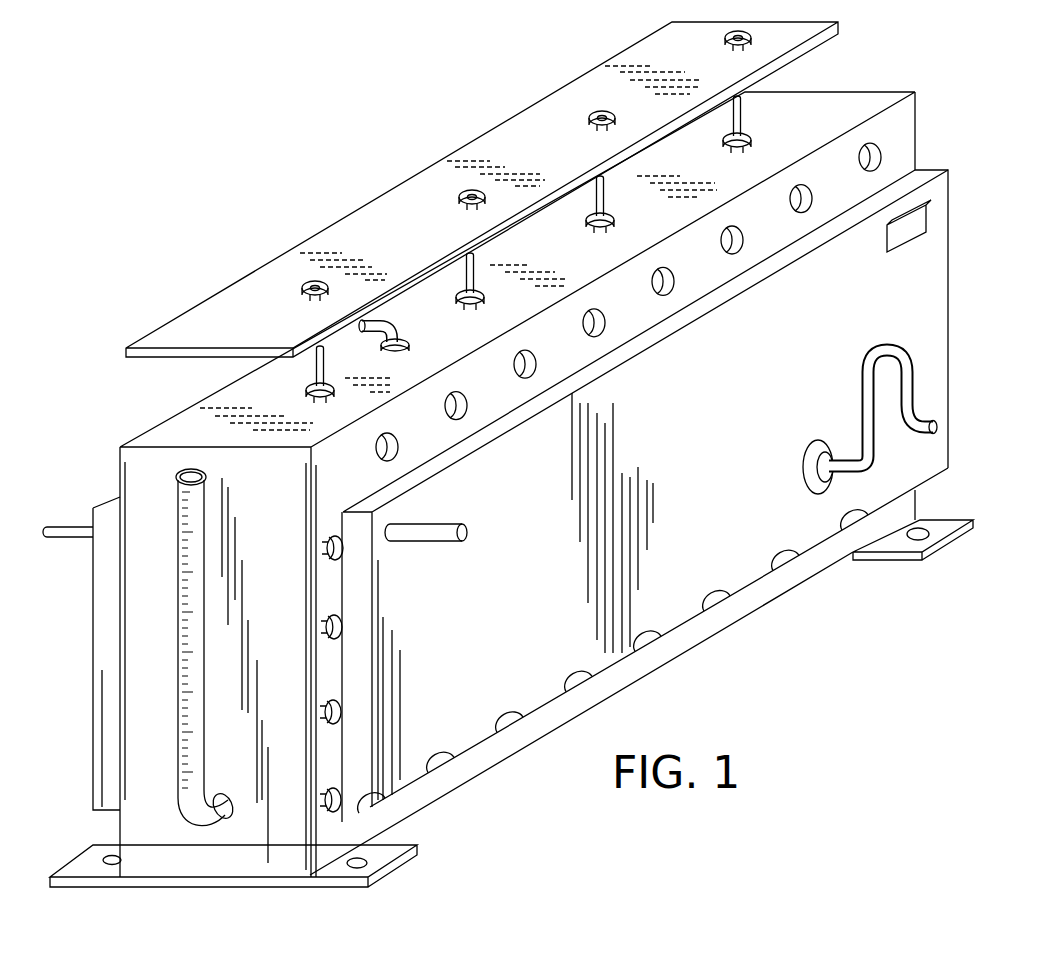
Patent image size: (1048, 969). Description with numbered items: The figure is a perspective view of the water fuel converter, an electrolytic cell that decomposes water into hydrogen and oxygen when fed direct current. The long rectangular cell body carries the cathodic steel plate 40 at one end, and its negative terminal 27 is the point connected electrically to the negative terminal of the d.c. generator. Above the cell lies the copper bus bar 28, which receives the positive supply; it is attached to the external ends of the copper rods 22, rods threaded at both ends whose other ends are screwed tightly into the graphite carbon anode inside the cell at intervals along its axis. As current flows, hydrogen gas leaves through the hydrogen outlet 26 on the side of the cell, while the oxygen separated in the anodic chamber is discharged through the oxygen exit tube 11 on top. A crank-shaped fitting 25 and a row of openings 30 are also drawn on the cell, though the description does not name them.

The oxygen exit tube 11 is at (406, 323).
The copper rod 22 is at (741, 108).
The crank handle 25 is at (845, 474).
The hydrogen outlet 26 is at (427, 541).
The negative terminal 27 is at (912, 235).
The bus bar 28 is at (375, 222).
The hole 30 is at (606, 318).
The cathodic steel plate 40 is at (940, 165).